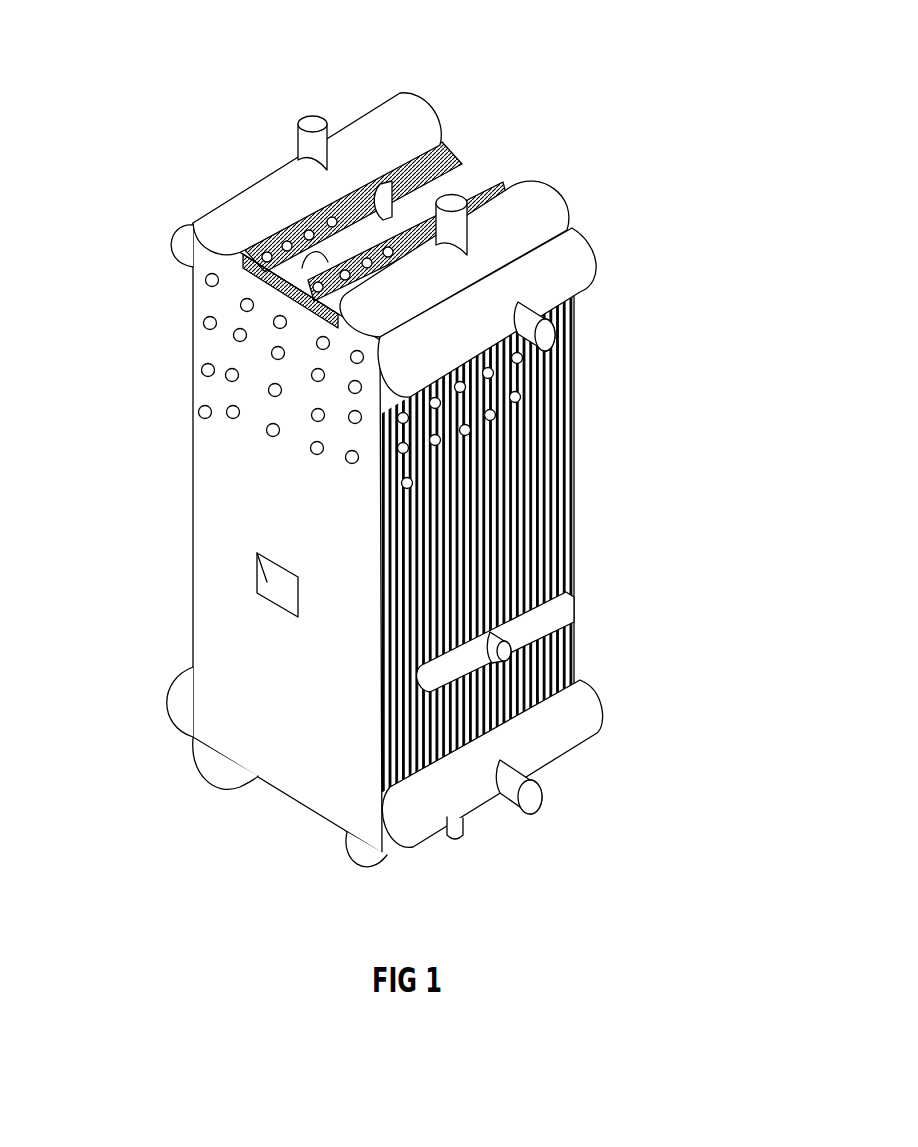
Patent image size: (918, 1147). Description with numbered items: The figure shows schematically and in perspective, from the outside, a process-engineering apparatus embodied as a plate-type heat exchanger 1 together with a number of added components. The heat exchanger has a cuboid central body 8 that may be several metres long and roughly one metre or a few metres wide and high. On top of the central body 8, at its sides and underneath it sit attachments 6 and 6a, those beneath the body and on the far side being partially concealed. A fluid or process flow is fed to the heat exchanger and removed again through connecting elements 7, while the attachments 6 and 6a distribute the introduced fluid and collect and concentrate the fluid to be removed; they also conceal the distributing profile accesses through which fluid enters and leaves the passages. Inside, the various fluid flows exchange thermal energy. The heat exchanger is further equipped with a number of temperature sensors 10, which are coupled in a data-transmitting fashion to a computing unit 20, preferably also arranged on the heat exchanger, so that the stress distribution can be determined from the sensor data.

The plate-type heat exchanger 1 is at (231, 69).
The attachment 6 is at (257, 193).
The attachment 6a is at (447, 183).
The connecting element 7 is at (450, 203).
The central body 8 is at (440, 143).
The temperature sensor 10 is at (233, 412).
The computing unit 20 is at (260, 577).